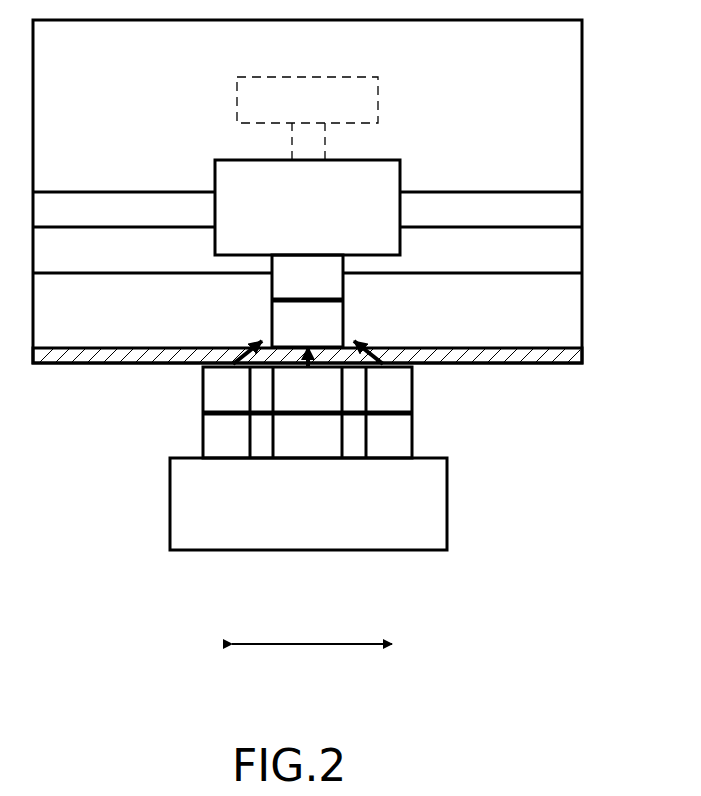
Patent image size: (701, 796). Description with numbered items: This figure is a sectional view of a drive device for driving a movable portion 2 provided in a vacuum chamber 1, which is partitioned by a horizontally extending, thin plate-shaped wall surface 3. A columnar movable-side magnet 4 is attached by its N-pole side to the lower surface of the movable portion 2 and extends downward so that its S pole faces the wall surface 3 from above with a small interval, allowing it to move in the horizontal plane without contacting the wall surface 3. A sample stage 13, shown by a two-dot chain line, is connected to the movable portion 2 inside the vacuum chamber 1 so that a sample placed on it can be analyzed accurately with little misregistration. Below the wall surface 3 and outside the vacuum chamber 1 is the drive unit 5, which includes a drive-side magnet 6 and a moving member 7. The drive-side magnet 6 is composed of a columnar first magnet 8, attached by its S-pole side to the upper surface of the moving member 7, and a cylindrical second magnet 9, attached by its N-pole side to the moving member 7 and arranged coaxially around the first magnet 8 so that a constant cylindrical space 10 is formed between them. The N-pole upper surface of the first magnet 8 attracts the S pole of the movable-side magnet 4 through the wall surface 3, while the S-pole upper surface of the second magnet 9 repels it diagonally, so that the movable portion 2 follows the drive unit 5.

The vacuum chamber 1 is at (307, 191).
The movable portion 2 is at (385, 160).
The wall surface 3 is at (574, 364).
The movable-side magnet 4 is at (343, 287).
The drive unit 5 is at (168, 510).
The drive-side magnet 6 is at (503, 380).
The moving member 7 is at (447, 523).
The first magnet 8 is at (412, 422).
The second magnet 9 is at (412, 385).
The space 10 is at (262, 446).
The sample stage 13 is at (335, 77).